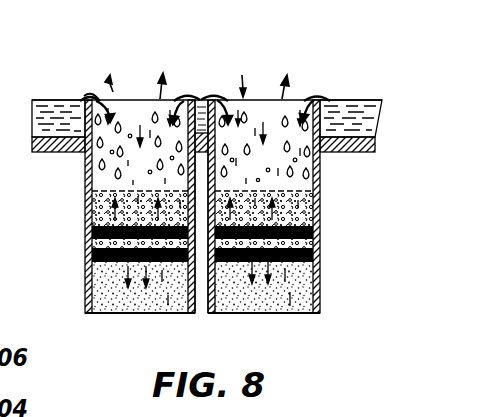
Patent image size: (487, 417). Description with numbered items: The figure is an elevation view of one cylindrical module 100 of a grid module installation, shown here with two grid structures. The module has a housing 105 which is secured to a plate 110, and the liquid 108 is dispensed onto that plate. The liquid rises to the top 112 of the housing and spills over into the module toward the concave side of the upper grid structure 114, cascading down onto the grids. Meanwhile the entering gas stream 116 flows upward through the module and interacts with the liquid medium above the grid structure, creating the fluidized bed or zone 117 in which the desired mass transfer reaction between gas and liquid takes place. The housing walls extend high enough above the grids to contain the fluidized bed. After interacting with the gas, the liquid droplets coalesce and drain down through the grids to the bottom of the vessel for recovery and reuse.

The module 100 is at (193, 186).
The housing 105 is at (193, 313).
The liquid 108 is at (50, 108).
The plate 110 is at (55, 151).
The top of the housing 112 is at (96, 99).
The upper grid structure 114 is at (92, 238).
The entering gas stream 116 is at (121, 296).
The fluidized bed or zone 117 is at (320, 173).